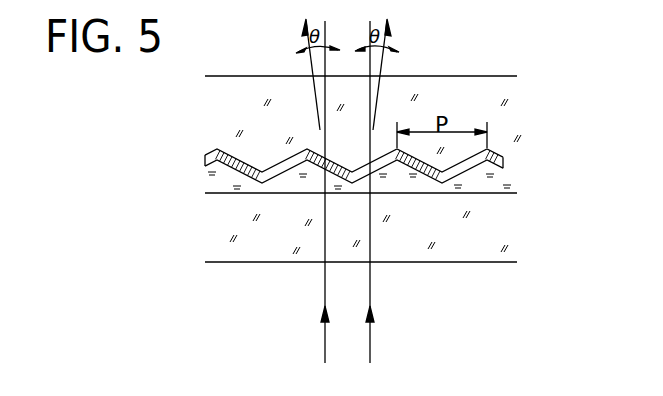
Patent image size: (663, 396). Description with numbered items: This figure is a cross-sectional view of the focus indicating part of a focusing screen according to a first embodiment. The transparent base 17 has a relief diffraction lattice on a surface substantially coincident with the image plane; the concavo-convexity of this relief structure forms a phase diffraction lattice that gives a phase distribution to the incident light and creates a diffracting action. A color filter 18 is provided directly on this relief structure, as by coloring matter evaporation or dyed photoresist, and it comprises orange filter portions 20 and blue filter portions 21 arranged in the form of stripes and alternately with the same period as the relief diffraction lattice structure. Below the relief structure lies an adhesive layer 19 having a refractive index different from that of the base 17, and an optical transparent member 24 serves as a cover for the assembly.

The transparent base 17 is at (515, 108).
The color filter 18 is at (505, 166).
The adhesive layer 19 is at (515, 190).
The orange filter portions 20 is at (225, 149).
The blue filter portions 21 is at (282, 162).
The optical transparent member 24 is at (509, 230).